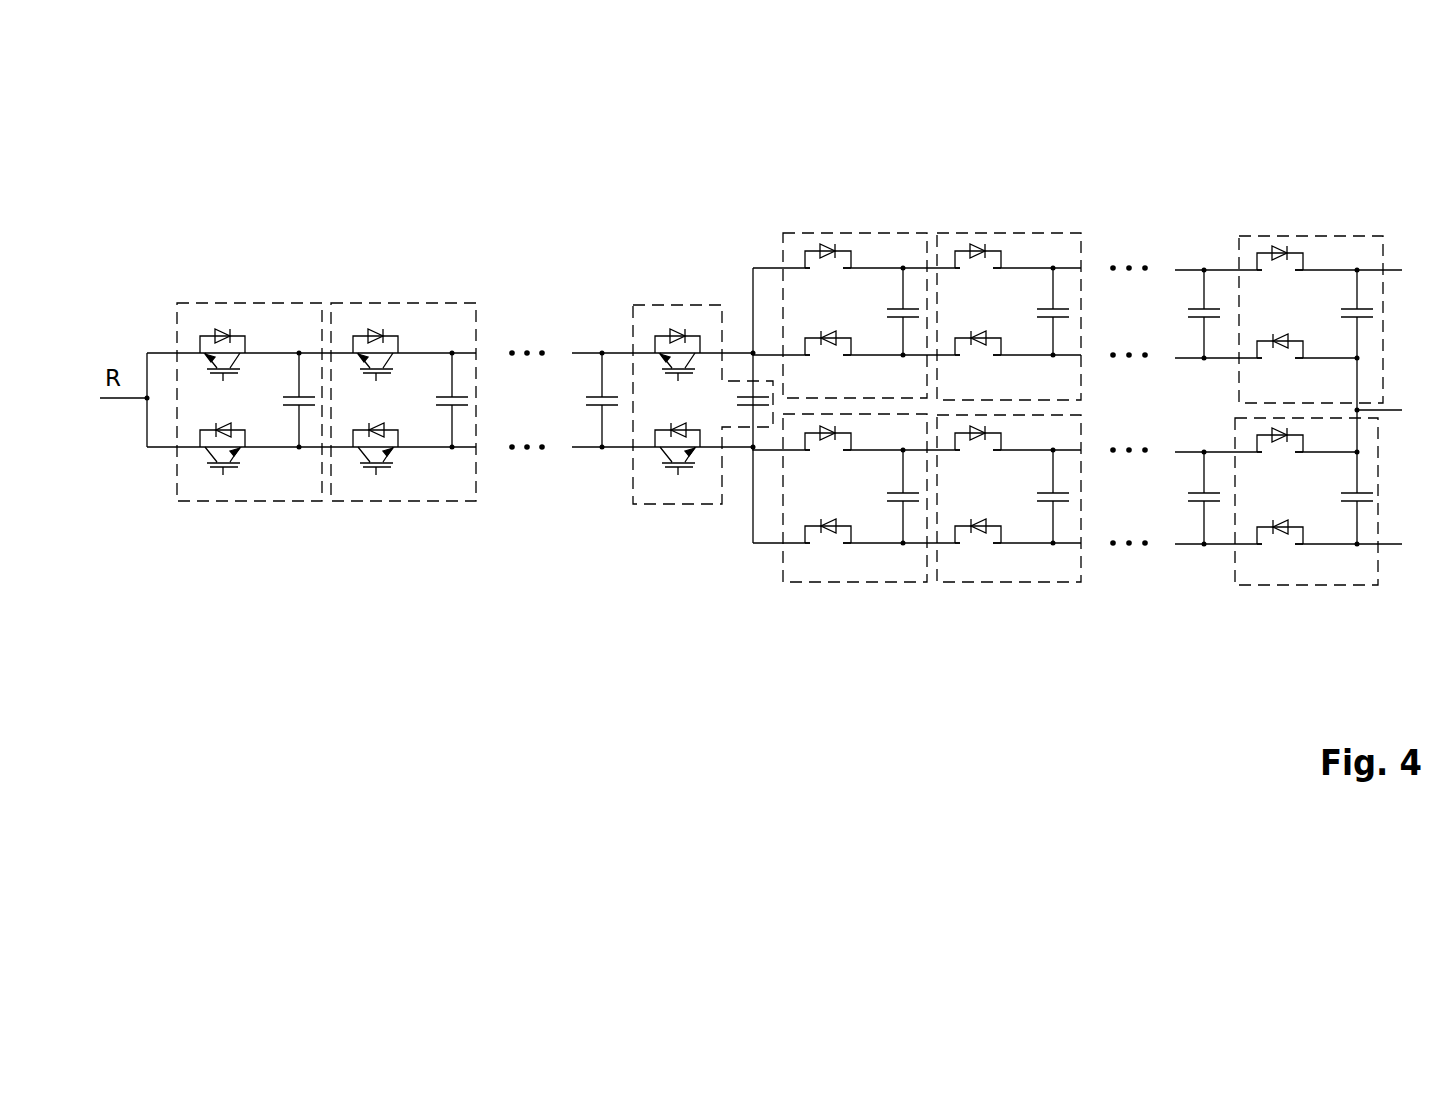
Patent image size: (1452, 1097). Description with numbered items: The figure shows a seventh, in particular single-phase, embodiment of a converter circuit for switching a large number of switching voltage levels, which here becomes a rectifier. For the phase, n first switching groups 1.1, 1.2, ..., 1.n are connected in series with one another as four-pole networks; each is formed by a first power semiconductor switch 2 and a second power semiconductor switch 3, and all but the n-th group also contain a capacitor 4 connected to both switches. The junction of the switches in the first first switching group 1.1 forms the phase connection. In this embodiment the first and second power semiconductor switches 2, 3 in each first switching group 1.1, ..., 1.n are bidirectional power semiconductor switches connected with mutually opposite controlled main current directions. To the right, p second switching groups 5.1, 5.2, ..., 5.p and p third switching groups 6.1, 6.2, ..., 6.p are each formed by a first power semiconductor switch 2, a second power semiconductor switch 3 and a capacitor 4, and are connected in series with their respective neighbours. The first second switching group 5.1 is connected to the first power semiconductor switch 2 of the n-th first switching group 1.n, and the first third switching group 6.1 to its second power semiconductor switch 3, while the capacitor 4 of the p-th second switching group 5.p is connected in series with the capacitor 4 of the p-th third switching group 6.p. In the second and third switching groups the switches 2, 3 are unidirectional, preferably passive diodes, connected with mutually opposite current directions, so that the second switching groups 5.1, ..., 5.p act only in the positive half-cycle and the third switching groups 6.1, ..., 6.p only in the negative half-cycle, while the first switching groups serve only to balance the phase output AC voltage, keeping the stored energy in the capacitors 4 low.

The first first switching group 1.1 is at (255, 303).
The second first switching group 1.2 is at (405, 303).
The n-th first switching group 1.n is at (677, 304).
The first power semiconductor switch 2 is at (197, 322).
The second power semiconductor switch 3 is at (797, 330).
The capacitor 4 is at (892, 308).
The first second switching group 5.1 is at (842, 233).
The second second switching group 5.2 is at (1048, 233).
The p-th second switching group 5.p is at (1242, 236).
The first third switching group 6.1 is at (820, 583).
The second third switching group 6.2 is at (1070, 582).
The p-th third switching group 6.p is at (1246, 588).